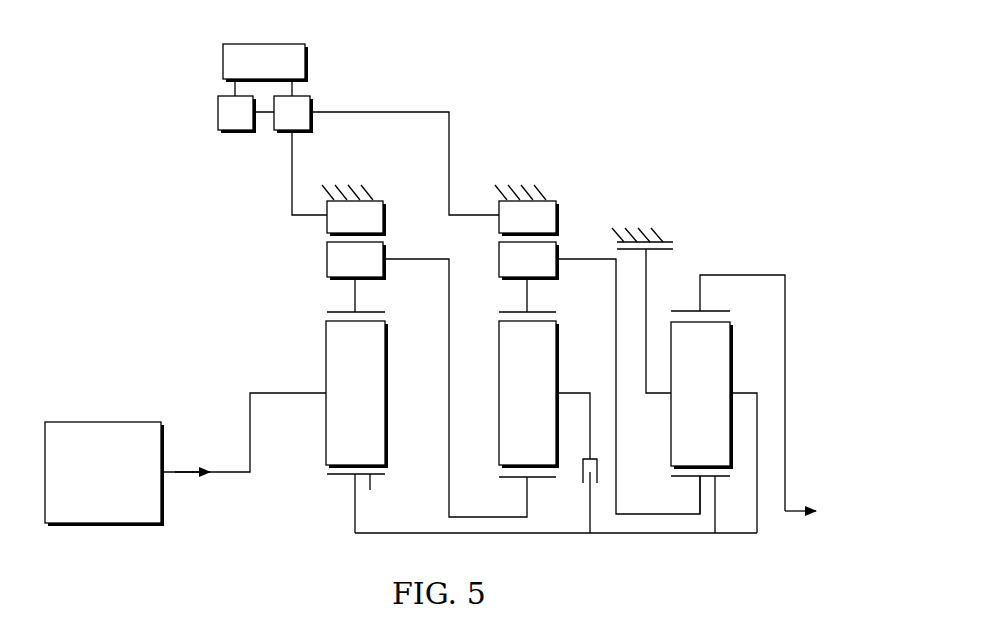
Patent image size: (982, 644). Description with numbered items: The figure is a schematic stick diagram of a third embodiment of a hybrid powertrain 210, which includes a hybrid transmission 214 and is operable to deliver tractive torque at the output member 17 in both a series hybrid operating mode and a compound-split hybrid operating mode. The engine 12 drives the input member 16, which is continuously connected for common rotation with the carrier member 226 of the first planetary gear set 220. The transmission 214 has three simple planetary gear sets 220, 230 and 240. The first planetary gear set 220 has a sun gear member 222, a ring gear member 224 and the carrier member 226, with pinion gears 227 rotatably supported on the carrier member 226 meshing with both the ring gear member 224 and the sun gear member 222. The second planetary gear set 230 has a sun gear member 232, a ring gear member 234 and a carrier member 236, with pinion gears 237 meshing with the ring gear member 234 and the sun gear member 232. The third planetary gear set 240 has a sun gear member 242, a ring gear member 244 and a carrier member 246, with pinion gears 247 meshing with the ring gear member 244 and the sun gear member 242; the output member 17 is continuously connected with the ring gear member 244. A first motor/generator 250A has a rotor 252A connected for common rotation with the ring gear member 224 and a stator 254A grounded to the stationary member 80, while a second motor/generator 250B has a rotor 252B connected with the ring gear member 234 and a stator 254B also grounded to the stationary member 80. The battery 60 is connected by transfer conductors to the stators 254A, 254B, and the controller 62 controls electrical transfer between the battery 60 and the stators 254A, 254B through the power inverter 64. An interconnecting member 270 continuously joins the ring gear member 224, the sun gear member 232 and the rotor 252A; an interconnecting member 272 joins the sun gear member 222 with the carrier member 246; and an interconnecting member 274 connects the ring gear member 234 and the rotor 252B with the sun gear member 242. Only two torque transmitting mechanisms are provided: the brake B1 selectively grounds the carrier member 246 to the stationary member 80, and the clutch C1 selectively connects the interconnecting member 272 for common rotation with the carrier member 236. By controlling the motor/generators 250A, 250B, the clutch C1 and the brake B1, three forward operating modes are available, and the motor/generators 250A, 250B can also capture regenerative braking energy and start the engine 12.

The engine 12 is at (104, 473).
The input member 16 is at (200, 478).
The output member 17 is at (792, 512).
The battery 60 is at (265, 62).
The controller 62 is at (236, 105).
The power inverter 64 is at (376, 147).
The stationary member 80 is at (340, 190).
The hybrid powertrain 210 is at (152, 183).
The hybrid transmission 214 is at (703, 163).
The first planetary gear set 220 is at (325, 483).
The sun gear member 222 is at (372, 490).
The ring gear member 224 is at (342, 310).
The carrier member 226 is at (288, 393).
The pinion gears 227 is at (356, 427).
The second planetary gear set 230 is at (510, 487).
The sun gear member 232 is at (510, 478).
The ring gear member 234 is at (515, 310).
The carrier member 236 is at (573, 393).
The pinion gears 237 is at (528, 399).
The third planetary gear set 240 is at (680, 485).
The sun gear member 242 is at (715, 478).
The ring gear member 244 is at (685, 310).
The carrier member 246 is at (745, 392).
The pinion gears 247 is at (701, 412).
The first motor/generator 250A is at (320, 237).
The second motor/generator 250B is at (490, 237).
The rotor 252A is at (356, 260).
The stator 254A is at (356, 218).
The rotor 252B is at (528, 260).
The stator 254B is at (528, 218).
The interconnecting member 270 is at (447, 385).
The interconnecting member 272 is at (572, 533).
The interconnecting member 274 is at (618, 402).
The brake B1 is at (685, 243).
The clutch C1 is at (580, 497).